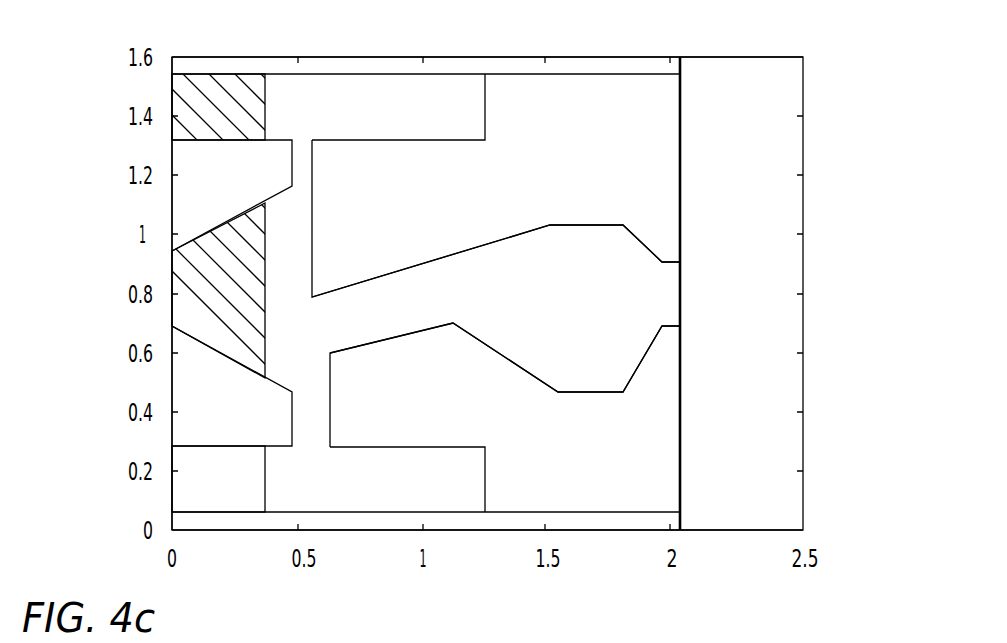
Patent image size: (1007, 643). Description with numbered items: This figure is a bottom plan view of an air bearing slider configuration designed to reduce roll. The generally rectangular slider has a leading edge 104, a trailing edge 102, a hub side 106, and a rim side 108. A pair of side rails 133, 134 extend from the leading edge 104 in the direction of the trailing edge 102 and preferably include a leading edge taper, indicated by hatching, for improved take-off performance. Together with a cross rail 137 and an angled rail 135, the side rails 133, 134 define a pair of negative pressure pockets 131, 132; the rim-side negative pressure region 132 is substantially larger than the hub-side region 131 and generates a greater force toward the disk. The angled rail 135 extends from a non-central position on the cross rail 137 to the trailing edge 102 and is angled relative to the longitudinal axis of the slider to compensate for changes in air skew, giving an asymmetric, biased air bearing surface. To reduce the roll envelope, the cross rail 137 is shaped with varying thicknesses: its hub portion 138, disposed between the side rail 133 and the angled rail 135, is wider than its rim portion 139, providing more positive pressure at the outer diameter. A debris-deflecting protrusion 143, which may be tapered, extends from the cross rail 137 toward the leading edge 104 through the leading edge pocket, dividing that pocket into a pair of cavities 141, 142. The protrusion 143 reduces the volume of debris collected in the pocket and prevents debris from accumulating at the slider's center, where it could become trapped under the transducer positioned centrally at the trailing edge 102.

The trailing edge 102 is at (680, 287).
The leading edge 104 is at (172, 270).
The hub side 106 is at (500, 530).
The rim side 108 is at (513, 57).
The hub-side negative pressure pocket 131 is at (423, 391).
The rim-side negative pressure pocket 132 is at (384, 235).
The side rail 133 is at (349, 481).
The side rail 134 is at (362, 129).
The angled rail 135 is at (556, 318).
The cross rail 137 is at (284, 338).
The hub portion 138 is at (332, 420).
The rim portion 139 is at (314, 169).
The cavity 141 is at (206, 418).
The cavity 142 is at (206, 191).
The debris-deflecting protrusion 143 is at (206, 303).